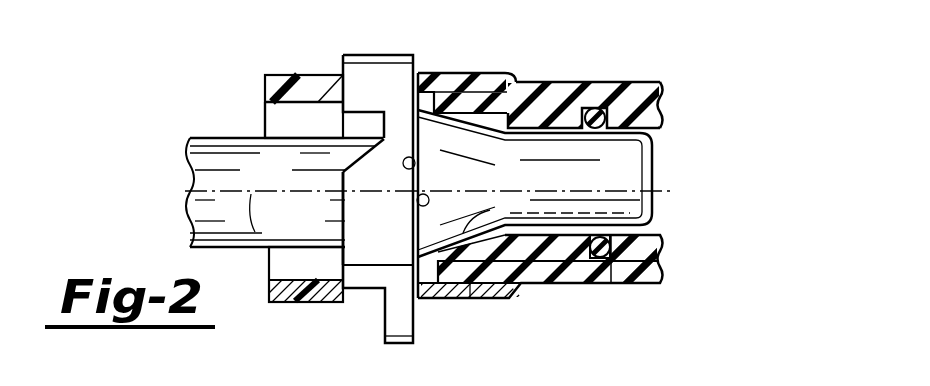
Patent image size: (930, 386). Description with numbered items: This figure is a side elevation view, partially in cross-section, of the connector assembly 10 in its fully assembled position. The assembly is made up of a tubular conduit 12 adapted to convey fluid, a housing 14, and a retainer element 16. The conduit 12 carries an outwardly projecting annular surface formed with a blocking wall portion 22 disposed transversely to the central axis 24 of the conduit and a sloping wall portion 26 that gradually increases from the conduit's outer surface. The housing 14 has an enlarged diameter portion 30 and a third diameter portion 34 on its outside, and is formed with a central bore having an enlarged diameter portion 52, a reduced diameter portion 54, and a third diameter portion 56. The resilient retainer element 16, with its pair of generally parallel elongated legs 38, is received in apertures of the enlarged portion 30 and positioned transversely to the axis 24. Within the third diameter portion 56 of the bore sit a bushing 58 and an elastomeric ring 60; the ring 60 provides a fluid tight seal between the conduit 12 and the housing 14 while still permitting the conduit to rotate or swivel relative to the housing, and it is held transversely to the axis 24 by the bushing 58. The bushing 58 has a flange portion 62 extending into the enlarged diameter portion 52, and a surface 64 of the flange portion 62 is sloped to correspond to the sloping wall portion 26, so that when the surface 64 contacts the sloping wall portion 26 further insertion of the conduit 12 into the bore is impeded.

The connector assembly 10 is at (172, 199).
The tubular conduit 12 is at (207, 124).
The housing 14 is at (593, 71).
The retainer element 16 is at (414, 63).
The blocking wall portion 22 is at (415, 163).
The central axis 24 is at (246, 250).
The sloping wall portion 26 is at (498, 205).
The enlarged diameter portion 30 is at (303, 74).
The third diameter portion 34 is at (643, 80).
The retainer legs 38 is at (412, 217).
The enlarged diameter portion 52 is at (264, 108).
The reduced diameter portion 54 is at (660, 235).
The third diameter portion 56 is at (533, 82).
The bushing 58 is at (568, 284).
The elastomeric ring 60 is at (623, 283).
The flange portion 62 is at (462, 299).
The surface 64 is at (498, 299).